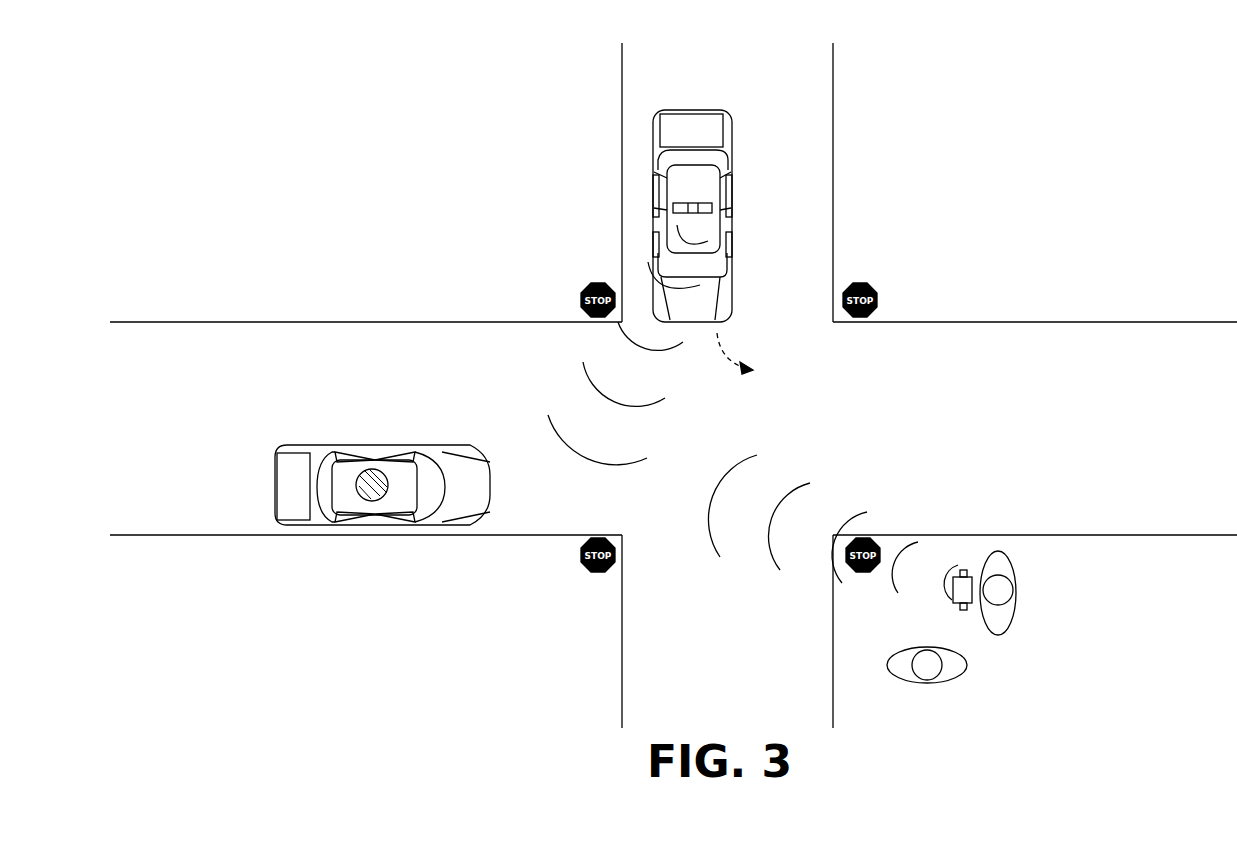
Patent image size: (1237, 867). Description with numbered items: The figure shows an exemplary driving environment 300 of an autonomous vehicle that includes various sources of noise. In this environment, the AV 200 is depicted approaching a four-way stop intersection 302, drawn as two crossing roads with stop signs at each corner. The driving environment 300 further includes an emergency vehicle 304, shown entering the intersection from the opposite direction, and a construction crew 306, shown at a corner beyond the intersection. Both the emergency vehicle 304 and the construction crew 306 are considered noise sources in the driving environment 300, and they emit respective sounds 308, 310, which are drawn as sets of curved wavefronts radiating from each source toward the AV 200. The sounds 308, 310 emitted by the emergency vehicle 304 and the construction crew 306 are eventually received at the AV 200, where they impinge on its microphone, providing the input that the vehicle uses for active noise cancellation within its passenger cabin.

The driving environment 300 is at (362, 80).
The four-way stop intersection 302 is at (922, 264).
The emergency vehicle 304 is at (695, 112).
The AV 200 is at (300, 525).
The construction crew 306 is at (1036, 508).
The sound 308 is at (583, 378).
The sound 310 is at (810, 485).